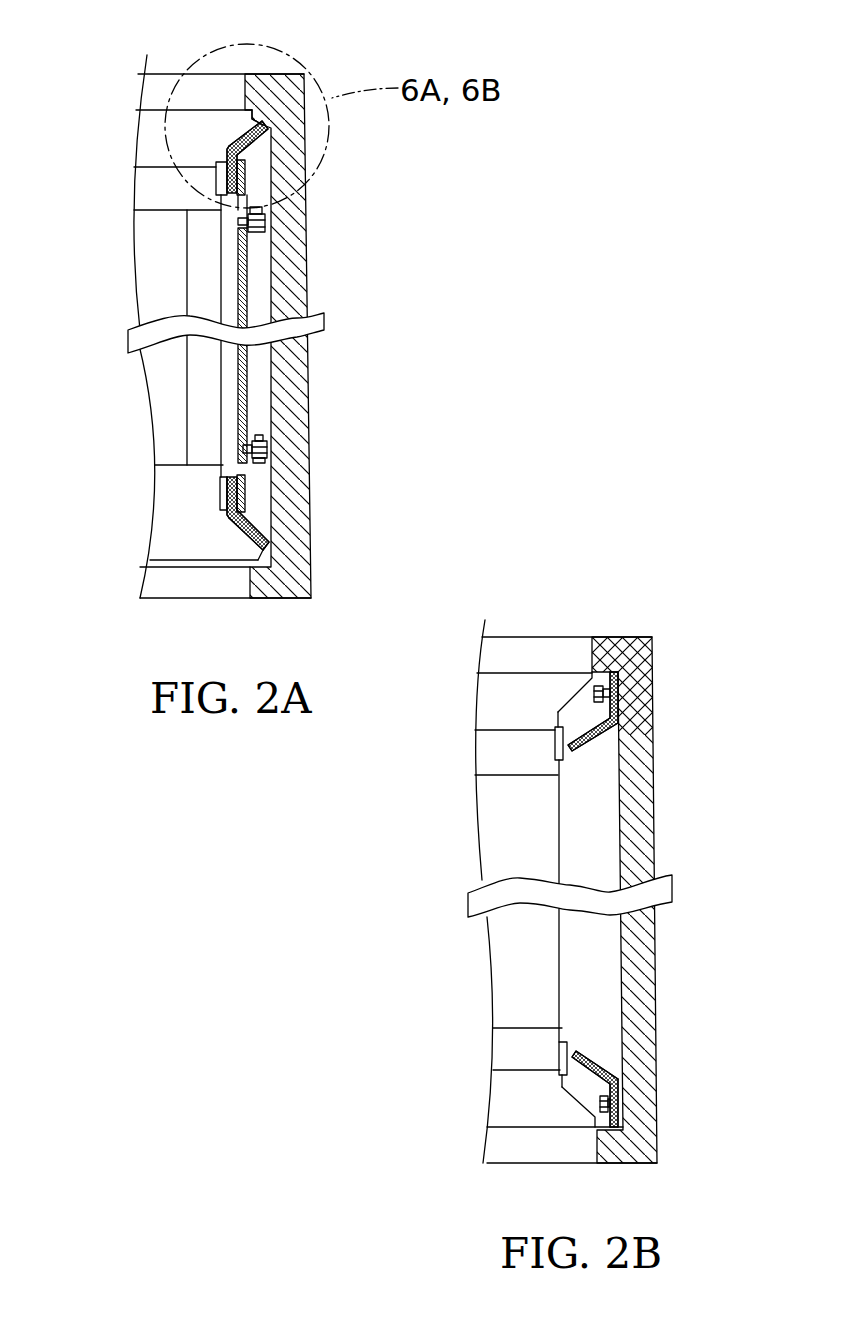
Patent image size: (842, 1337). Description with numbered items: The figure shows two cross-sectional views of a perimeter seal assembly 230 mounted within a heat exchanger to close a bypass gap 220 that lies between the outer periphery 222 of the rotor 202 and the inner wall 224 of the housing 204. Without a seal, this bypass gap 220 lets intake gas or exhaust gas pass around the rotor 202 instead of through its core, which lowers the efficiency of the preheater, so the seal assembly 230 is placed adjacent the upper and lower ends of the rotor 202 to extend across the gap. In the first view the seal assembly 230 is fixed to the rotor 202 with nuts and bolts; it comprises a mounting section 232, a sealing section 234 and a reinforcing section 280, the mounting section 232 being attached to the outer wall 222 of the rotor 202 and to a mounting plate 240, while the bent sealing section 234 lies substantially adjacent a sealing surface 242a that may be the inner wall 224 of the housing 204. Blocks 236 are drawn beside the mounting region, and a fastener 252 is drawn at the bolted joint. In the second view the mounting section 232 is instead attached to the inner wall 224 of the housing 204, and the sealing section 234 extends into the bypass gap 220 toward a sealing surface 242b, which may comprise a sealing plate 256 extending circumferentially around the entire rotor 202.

In FIG. 2A, the rotor 202 is at (210, 120).
In FIG. 2B, the rotor 202 is at (547, 700).
In FIG. 2A, the housing 204 is at (293, 427).
In FIG. 2B, the housing 204 is at (645, 878).
In FIG. 2A, the bypass gap 220 is at (257, 302).
In FIG. 2B, the bypass gap 220 is at (603, 950).
In FIG. 2A, the outer periphery 222 is at (227, 297).
In FIG. 2A, the inner wall 224 is at (270, 408).
In FIG. 2B, the inner wall 224 is at (617, 798).
In FIG. 2A, the perimeter seal assembly 230 is at (260, 123).
In FIG. 2B, the perimeter seal assembly 230 is at (593, 683).
In FIG. 2A, the mounting section 232 is at (242, 175).
In FIG. 2B, the mounting section 232 is at (603, 688).
In FIG. 2A, the sealing section 234 is at (262, 124).
In FIG. 2B, the sealing section 234 is at (594, 752).
In FIG. 2A, the backing block 236 is at (216, 178).
In FIG. 2A, the mounting plate 240 is at (247, 370).
In FIG. 2A, the sealing surface 242a is at (250, 142).
In FIG. 2B, the sealing surface 242b is at (566, 758).
In FIG. 2B, the fastener 252 is at (608, 694).
In FIG. 2B, the sealing plate 256 is at (556, 733).
In FIG. 2A, the reinforcing section 280 is at (226, 140).
In FIG. 2B, the reinforcing section 280 is at (614, 728).